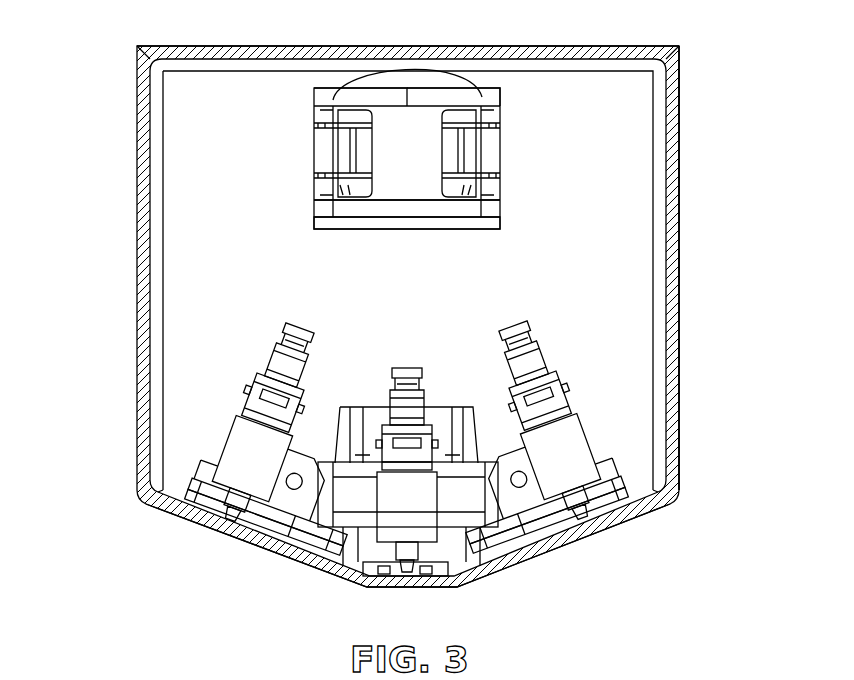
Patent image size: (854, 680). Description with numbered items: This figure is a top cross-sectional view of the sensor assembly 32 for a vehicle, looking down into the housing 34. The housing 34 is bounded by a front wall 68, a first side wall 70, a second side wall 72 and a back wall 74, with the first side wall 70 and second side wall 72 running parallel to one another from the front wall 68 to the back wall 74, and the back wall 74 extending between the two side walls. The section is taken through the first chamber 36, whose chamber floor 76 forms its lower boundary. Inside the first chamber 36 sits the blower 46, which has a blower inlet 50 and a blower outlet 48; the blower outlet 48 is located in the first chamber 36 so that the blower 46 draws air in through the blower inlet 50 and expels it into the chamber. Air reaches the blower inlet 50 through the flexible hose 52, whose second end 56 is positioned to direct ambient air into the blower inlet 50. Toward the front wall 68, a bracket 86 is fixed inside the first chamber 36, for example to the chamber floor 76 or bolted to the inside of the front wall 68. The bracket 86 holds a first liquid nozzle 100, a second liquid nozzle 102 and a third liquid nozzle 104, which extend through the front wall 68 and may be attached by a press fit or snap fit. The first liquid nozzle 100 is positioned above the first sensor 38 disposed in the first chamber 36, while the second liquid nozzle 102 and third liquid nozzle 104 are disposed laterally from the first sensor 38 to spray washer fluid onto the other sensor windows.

The sensor assembly 32 is at (723, 251).
The housing 34 is at (237, 46).
The first chamber 36 is at (620, 183).
The first sensor 38 is at (447, 405).
The blower 46 is at (316, 152).
The blower outlet 48 is at (407, 229).
The blower inlet 50 is at (452, 90).
The flexible hose 52 is at (410, 72).
The second end 56 is at (357, 104).
The front wall 68 is at (528, 552).
The first side wall 70 is at (138, 232).
The second side wall 72 is at (679, 393).
The back wall 74 is at (573, 46).
The chamber floor 76 is at (340, 273).
The bracket 86 is at (497, 448).
The first liquid nozzle 100 is at (407, 576).
The second liquid nozzle 102 is at (232, 522).
The third liquid nozzle 104 is at (582, 522).